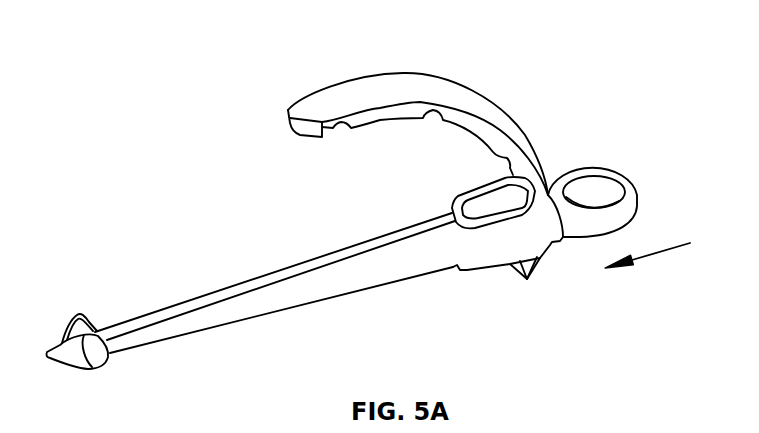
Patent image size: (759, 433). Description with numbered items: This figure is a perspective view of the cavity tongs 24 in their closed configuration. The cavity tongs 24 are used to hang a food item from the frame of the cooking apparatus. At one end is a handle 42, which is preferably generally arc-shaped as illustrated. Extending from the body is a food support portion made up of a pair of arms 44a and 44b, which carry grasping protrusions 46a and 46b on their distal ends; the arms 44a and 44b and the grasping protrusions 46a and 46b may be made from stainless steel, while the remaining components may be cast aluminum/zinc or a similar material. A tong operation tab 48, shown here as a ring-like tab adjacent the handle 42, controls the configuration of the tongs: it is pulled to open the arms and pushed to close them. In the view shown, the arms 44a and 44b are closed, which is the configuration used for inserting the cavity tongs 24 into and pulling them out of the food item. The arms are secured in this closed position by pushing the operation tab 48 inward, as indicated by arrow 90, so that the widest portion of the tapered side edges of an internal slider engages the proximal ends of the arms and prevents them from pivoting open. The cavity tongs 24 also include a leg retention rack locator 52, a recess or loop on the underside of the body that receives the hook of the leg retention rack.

The cavity tongs 24 is at (158, 128).
The handle 42 is at (417, 73).
The arm 44a is at (163, 342).
The arm 44b is at (172, 305).
The grasping protrusion 46a is at (74, 369).
The grasping protrusion 46b is at (68, 323).
The tong operation tab 48 is at (638, 191).
The leg retention rack locator 52 is at (529, 283).
The arrow 90 is at (643, 257).